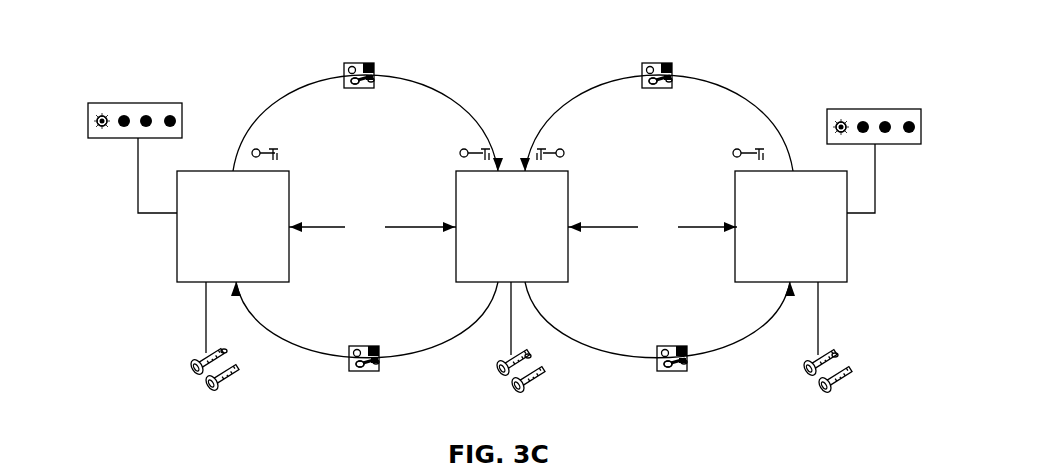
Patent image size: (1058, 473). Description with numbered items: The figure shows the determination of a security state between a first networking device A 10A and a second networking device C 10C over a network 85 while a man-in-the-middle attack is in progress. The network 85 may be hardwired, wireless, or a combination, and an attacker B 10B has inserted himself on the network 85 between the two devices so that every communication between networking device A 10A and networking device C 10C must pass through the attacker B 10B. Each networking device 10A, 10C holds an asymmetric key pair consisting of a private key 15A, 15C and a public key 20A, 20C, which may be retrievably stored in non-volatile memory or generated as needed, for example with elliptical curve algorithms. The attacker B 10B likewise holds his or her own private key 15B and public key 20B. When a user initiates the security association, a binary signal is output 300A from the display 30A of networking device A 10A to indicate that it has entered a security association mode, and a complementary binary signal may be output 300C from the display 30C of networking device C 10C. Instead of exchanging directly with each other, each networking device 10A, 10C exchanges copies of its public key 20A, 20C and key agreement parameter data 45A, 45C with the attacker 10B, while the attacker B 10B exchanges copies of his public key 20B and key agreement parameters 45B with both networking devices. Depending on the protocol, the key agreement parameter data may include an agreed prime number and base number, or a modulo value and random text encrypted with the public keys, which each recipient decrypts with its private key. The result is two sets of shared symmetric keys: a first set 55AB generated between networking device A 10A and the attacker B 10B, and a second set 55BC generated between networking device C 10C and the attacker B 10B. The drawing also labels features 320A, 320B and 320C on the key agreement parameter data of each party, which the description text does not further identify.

The networking device A 10A is at (284, 270).
The attacker B 10B is at (560, 270).
The networking device C 10C is at (840, 270).
The private key 15A is at (219, 398).
The private key 15B is at (528, 397).
The private key 15C is at (835, 397).
The public key 20A is at (376, 88).
The public key 20B is at (377, 371).
The public key 20C is at (670, 88).
The display 30A is at (154, 103).
The display 30C is at (892, 109).
The binary signal output 300A is at (96, 121).
The binary signal output 300C is at (832, 125).
The key agreement parameter data 45A is at (360, 63).
The key agreement parameter data 45B is at (368, 346).
The key agreement parameter data 45C is at (662, 63).
The key receptacle of device A 320A is at (358, 88).
The key receptacle of device B 320B is at (368, 371).
The key receptacle of device C 320C is at (660, 88).
The first set of shared symmetric keys 55AB is at (320, 146).
The second set of shared symmetric keys 55BC is at (603, 153).
The network 85 is at (513, 227).